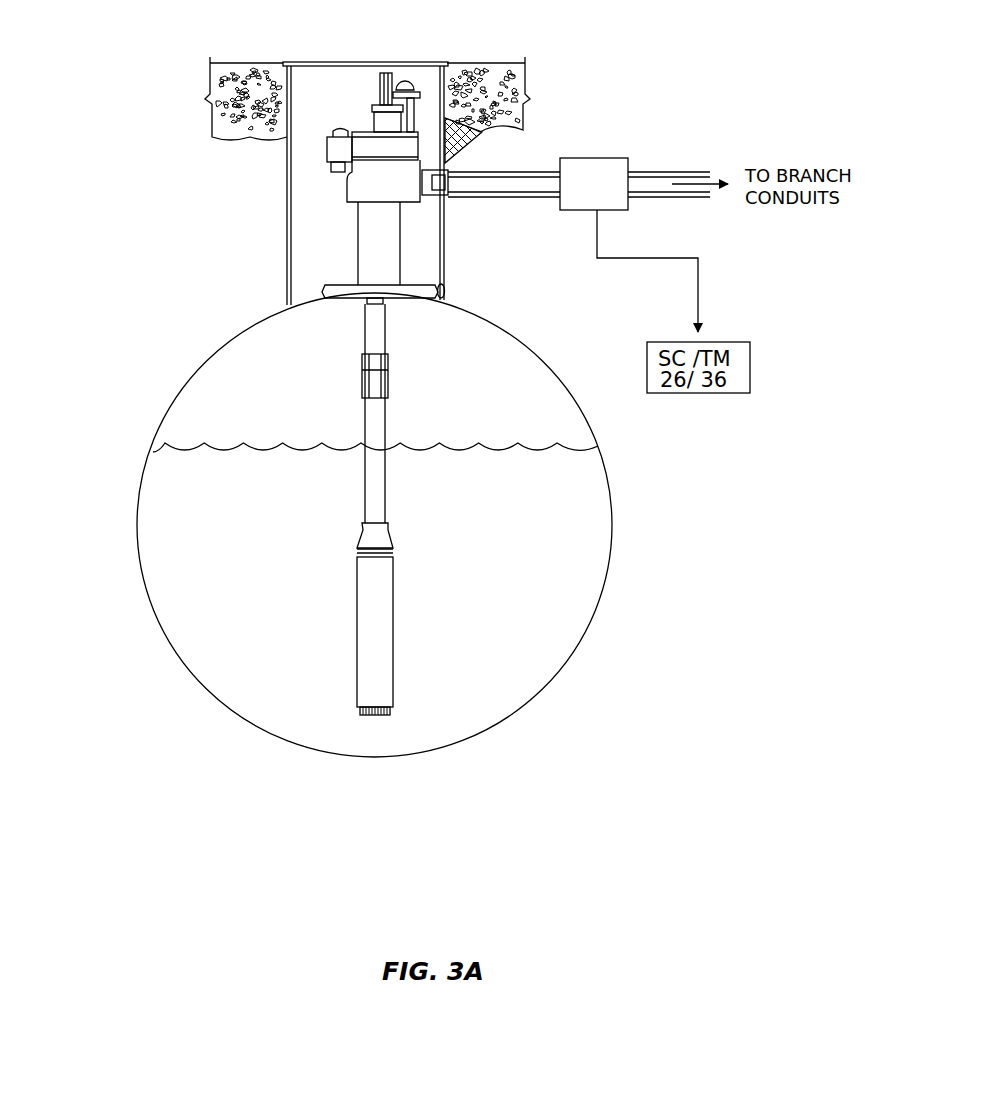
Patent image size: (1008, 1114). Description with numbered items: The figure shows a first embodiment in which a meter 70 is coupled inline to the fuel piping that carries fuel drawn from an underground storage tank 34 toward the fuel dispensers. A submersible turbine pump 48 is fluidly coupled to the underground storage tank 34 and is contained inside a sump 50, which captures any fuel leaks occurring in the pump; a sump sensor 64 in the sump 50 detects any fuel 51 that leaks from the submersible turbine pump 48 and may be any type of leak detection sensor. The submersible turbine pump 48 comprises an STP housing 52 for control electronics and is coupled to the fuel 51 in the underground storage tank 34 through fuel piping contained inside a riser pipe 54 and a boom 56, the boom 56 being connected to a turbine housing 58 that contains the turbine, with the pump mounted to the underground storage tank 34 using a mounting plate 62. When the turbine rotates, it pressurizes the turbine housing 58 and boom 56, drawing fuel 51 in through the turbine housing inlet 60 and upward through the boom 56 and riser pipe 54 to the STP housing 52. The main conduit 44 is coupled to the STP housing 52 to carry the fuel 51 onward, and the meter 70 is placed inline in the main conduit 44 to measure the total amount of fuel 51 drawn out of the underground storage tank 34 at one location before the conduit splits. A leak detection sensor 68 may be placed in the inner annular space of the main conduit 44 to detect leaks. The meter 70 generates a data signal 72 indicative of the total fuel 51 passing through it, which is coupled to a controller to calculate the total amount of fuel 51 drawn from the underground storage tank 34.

The underground storage tank 34 is at (138, 508).
The main conduit 44 is at (455, 198).
The submersible turbine pump 48 is at (323, 124).
The sump 50 is at (289, 178).
The fuel 51 is at (587, 490).
The STP housing 52 is at (422, 157).
The riser pipe 54 is at (358, 247).
The boom 56 is at (365, 415).
The turbine housing 58 is at (393, 623).
The turbine housing inlet 60 is at (381, 716).
The mounting plate 62 is at (325, 286).
The sump sensor 64 is at (444, 285).
The leak detection sensor 68 is at (449, 173).
The meter 70 is at (590, 210).
The data signal 72 is at (698, 288).